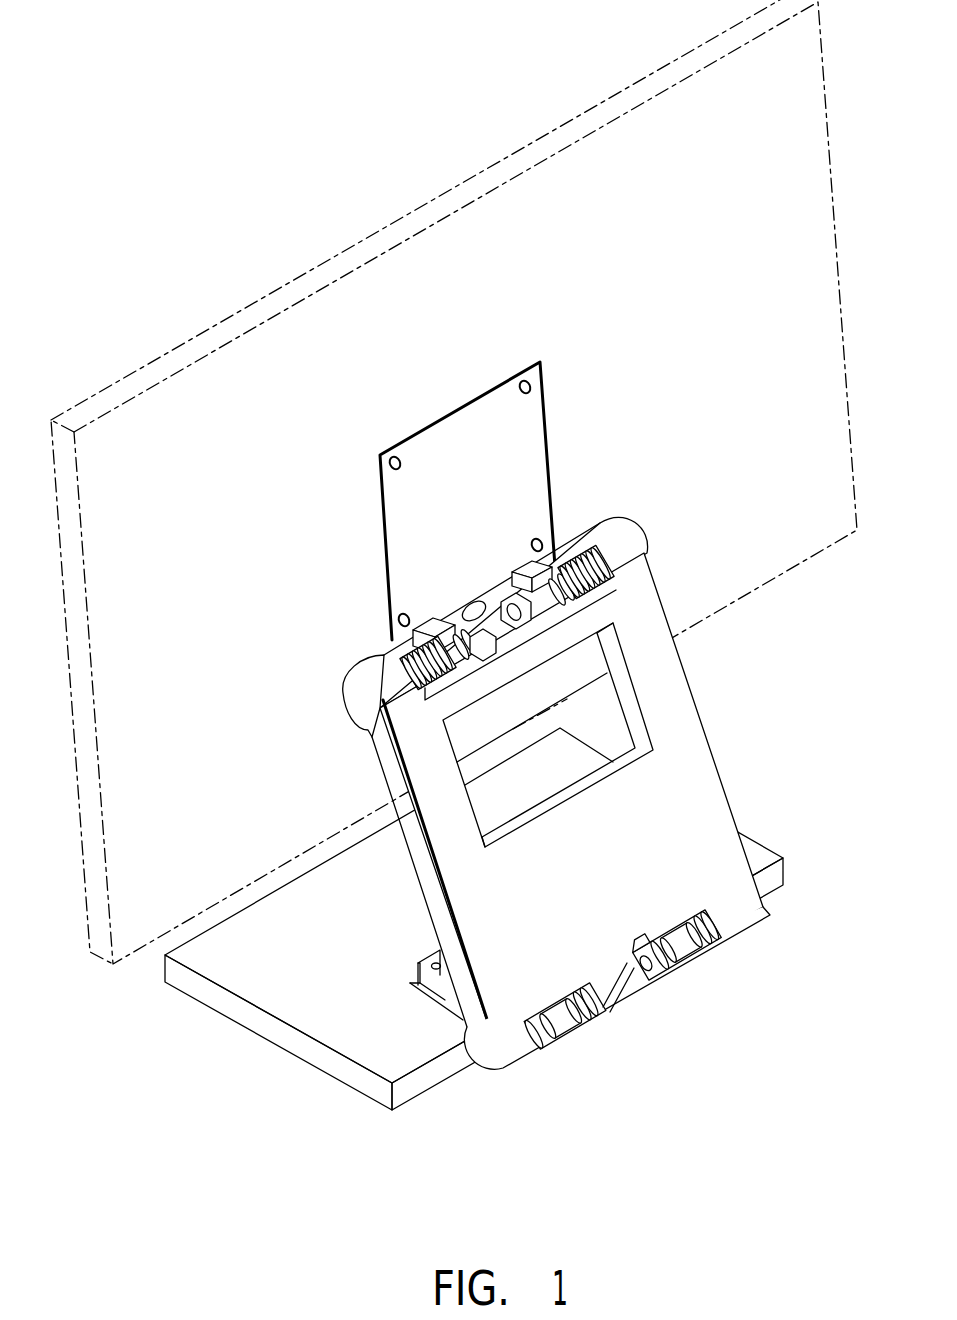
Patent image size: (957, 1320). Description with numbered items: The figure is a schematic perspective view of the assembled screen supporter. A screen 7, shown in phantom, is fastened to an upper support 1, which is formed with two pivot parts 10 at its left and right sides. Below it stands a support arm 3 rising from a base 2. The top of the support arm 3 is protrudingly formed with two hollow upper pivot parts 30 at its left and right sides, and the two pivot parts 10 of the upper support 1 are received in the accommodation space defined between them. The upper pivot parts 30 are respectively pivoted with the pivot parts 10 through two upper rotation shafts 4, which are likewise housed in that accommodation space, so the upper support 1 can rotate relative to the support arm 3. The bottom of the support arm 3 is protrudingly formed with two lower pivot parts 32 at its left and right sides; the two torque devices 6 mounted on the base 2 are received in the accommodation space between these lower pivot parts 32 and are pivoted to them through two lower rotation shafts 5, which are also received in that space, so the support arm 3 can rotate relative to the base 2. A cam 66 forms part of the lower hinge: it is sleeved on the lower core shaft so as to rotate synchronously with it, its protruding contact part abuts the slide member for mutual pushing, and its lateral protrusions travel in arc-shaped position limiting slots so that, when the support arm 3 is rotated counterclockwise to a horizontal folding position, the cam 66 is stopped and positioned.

The upper support 1 is at (458, 432).
The base 2 is at (282, 1000).
The support arm 3 is at (555, 800).
The upper rotation shaft 4 is at (405, 645).
The lower rotation shaft 5 is at (600, 1027).
The torque device 6 is at (427, 952).
The screen 7 is at (420, 205).
The pivot part 10 is at (430, 622).
The upper pivot part 30 is at (623, 540).
The lower pivot part 32 is at (747, 930).
The cam 66 is at (562, 1023).